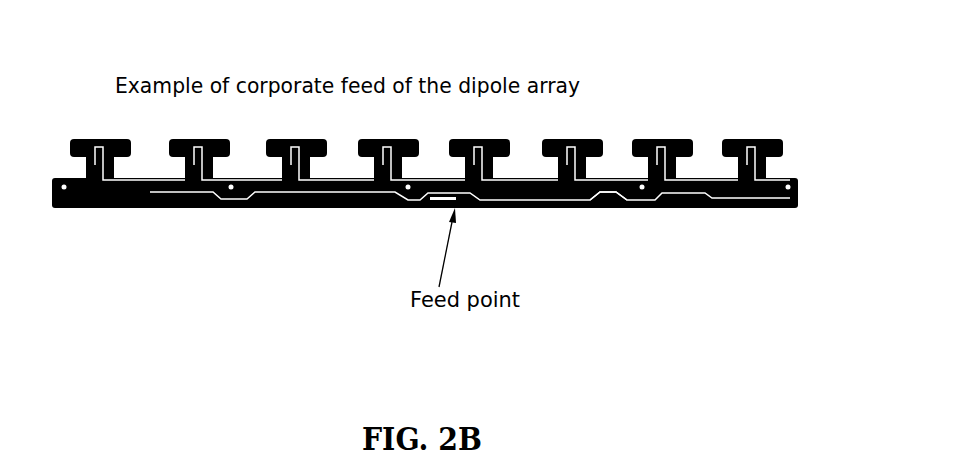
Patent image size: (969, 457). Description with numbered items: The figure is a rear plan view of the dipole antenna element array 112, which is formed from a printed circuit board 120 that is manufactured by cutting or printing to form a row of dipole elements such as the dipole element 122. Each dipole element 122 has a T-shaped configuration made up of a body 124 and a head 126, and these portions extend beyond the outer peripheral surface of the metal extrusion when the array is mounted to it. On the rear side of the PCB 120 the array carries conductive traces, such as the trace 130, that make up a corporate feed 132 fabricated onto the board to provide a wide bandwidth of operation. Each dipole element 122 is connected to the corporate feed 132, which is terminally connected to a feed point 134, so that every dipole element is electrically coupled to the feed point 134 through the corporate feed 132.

The dipole antenna element array 112 is at (760, 92).
The printed circuit board 120 is at (790, 186).
The dipole element 122 is at (631, 127).
The body 124 is at (627, 205).
The head 126 is at (595, 140).
The trace 130 is at (545, 141).
The corporate feed 132 is at (605, 206).
The feed point 134 is at (452, 203).